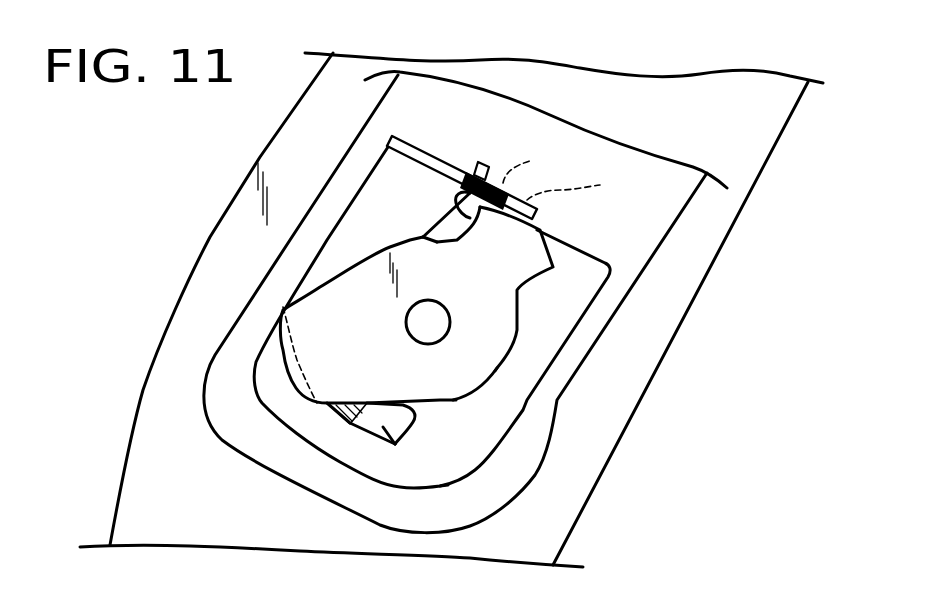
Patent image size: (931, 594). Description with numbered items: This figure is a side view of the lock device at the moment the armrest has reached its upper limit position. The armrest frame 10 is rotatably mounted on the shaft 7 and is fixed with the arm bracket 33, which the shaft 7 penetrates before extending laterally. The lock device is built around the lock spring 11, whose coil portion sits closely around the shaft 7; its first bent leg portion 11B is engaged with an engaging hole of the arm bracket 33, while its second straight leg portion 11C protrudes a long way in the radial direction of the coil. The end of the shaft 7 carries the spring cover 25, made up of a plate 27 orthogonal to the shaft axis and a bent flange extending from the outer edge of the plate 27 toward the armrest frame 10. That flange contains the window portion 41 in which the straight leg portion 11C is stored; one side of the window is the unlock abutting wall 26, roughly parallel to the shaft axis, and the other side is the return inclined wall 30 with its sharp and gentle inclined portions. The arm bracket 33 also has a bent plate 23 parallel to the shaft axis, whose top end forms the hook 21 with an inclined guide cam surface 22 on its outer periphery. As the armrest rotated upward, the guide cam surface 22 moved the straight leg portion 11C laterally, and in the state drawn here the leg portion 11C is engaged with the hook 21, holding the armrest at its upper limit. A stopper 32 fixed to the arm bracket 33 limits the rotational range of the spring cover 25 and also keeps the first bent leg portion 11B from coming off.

The window portion 41 is at (347, 257).
The armrest frame 10 is at (485, 488).
The bent plate 23 is at (420, 152).
The second straight leg portion 11C is at (480, 176).
The hook 21 is at (532, 164).
The inclined guide cam surface 22 is at (574, 186).
The unlock abutting wall 26 is at (482, 205).
The lock spring 11 is at (427, 222).
The return inclined wall 30 is at (297, 357).
The shaft 7 is at (433, 320).
The first bent leg portion 11B is at (337, 405).
The stopper 32 is at (395, 444).
The arm bracket 33 is at (443, 470).
The plate 27 is at (487, 367).
The spring cover 25 is at (462, 405).